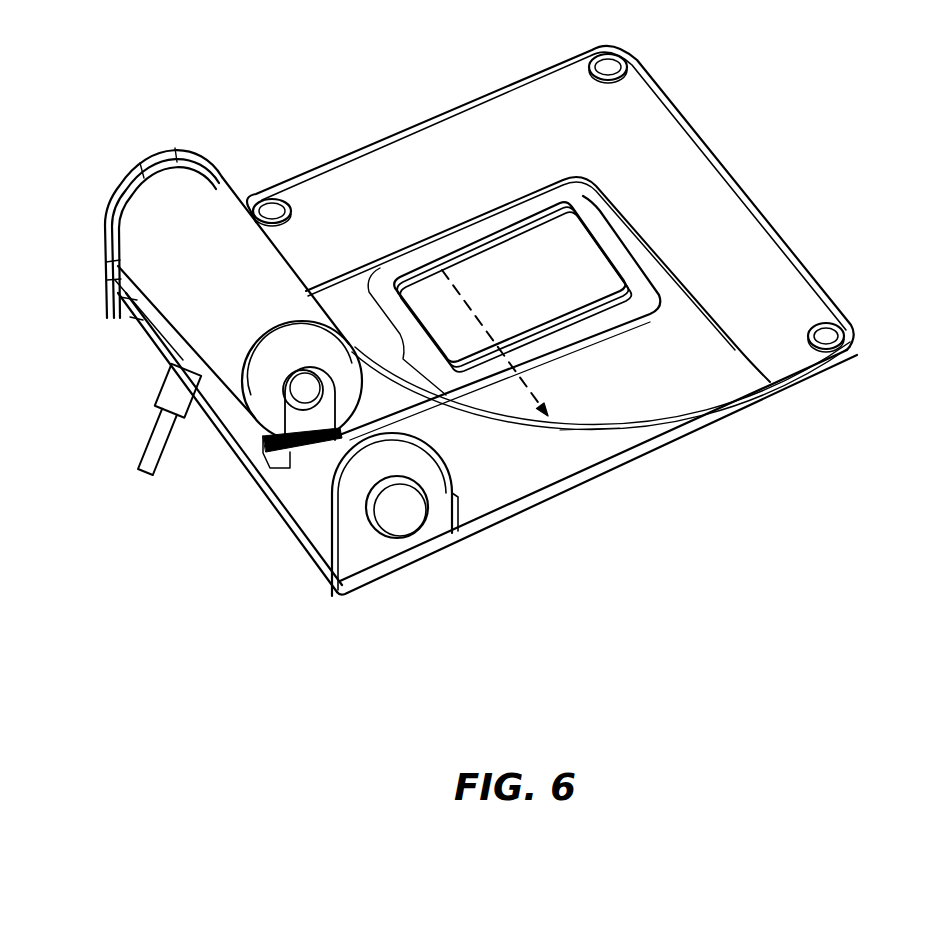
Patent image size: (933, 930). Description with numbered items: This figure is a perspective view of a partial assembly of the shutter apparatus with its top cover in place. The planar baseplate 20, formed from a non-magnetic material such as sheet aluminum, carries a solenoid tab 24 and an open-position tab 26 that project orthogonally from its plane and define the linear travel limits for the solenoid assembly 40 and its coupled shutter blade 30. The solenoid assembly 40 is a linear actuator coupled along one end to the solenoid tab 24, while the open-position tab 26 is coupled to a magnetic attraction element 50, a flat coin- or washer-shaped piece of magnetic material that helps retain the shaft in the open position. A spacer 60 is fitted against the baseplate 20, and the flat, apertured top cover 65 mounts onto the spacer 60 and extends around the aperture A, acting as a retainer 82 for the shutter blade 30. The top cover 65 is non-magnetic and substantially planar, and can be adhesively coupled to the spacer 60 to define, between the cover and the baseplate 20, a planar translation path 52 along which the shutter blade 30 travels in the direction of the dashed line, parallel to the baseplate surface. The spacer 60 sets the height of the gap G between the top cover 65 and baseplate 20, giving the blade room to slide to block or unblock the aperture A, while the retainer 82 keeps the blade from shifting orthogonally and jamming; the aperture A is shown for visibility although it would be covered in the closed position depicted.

The baseplate 20 is at (753, 406).
The solenoid tab 24 is at (200, 155).
The open-position tab 26 is at (337, 494).
The shutter blade 30 is at (395, 283).
The solenoid assembly 40 is at (118, 143).
The magnetic attraction element 50 is at (400, 517).
The translation path 52 is at (527, 384).
The spacer 60 is at (816, 281).
The top cover 65 is at (657, 417).
The retainer 82 is at (707, 190).
The aperture A is at (498, 302).
The gap G is at (598, 443).